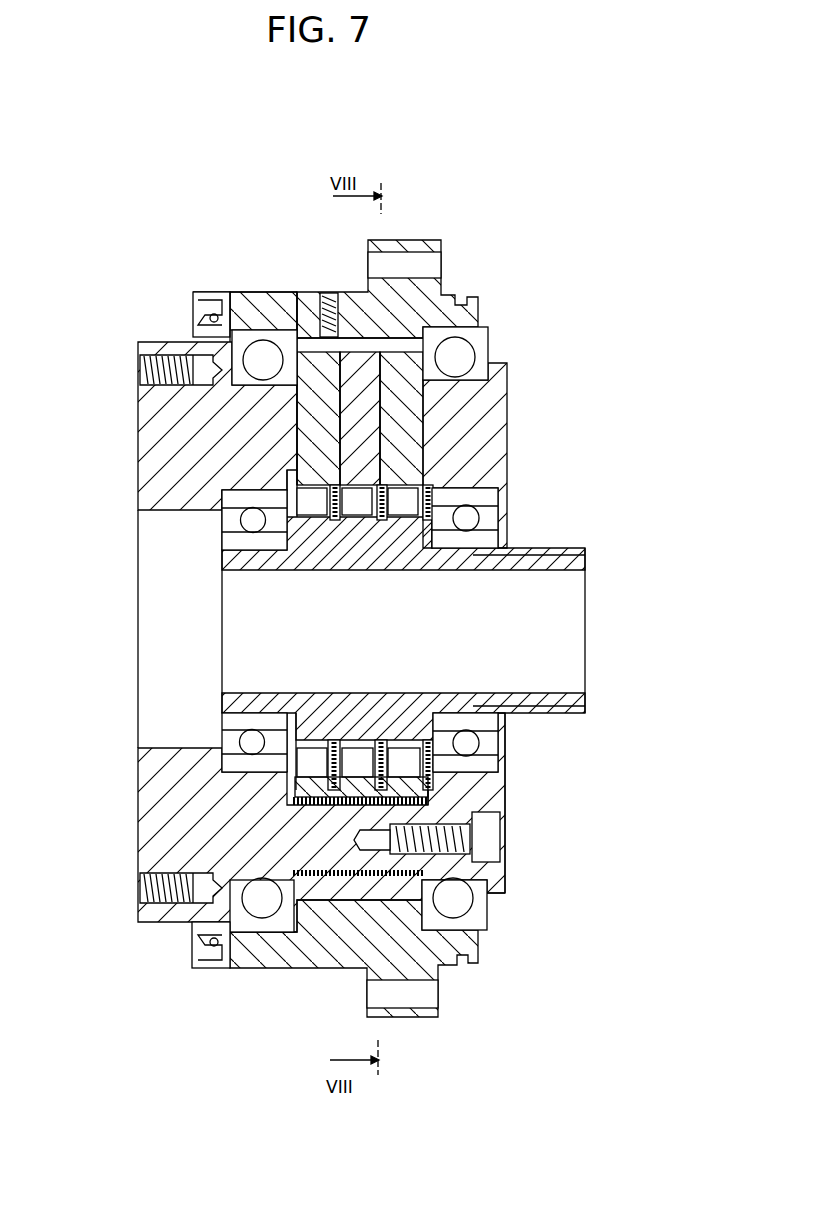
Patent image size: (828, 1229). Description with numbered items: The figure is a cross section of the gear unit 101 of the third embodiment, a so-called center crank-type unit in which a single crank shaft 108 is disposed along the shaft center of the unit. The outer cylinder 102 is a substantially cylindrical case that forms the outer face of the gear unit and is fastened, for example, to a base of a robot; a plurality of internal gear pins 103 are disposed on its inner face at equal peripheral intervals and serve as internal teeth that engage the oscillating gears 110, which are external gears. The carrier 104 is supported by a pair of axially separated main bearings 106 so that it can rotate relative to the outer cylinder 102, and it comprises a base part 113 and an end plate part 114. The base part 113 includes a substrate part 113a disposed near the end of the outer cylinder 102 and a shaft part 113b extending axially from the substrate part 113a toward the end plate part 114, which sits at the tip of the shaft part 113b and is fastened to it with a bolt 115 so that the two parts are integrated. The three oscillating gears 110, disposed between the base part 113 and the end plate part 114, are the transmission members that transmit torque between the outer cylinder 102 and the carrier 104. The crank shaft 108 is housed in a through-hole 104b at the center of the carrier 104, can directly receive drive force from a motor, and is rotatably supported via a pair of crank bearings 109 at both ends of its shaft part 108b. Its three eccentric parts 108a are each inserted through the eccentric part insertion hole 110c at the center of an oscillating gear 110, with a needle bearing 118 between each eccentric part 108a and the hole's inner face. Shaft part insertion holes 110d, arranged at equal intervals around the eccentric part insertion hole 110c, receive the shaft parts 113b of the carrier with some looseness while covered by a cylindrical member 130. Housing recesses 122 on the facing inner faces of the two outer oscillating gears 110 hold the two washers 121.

The gear unit 101 is at (427, 224).
The outer cylinder 102 is at (300, 330).
The internal gear pins 103 is at (405, 340).
The carrier 104 is at (195, 492).
The through-hole 104b is at (176, 515).
The main bearings 106 is at (255, 360).
The crank shaft 108 is at (575, 562).
The eccentric parts 108a is at (315, 737).
The shaft part 108b is at (565, 702).
The crank bearings 109 is at (250, 742).
The oscillating gears 110 is at (425, 362).
The eccentric part insertion hole 110c is at (315, 760).
The shaft part insertion holes 110d is at (360, 872).
The base part 113 is at (185, 462).
The substrate part 113a is at (185, 843).
The shaft part 113b is at (440, 810).
The end plate part 114 is at (485, 405).
The bolt 115 is at (490, 835).
The needle bearings 118 is at (335, 803).
The washers 121 is at (312, 770).
The housing recesses 122 is at (322, 465).
The cylindrical member 130 is at (392, 867).